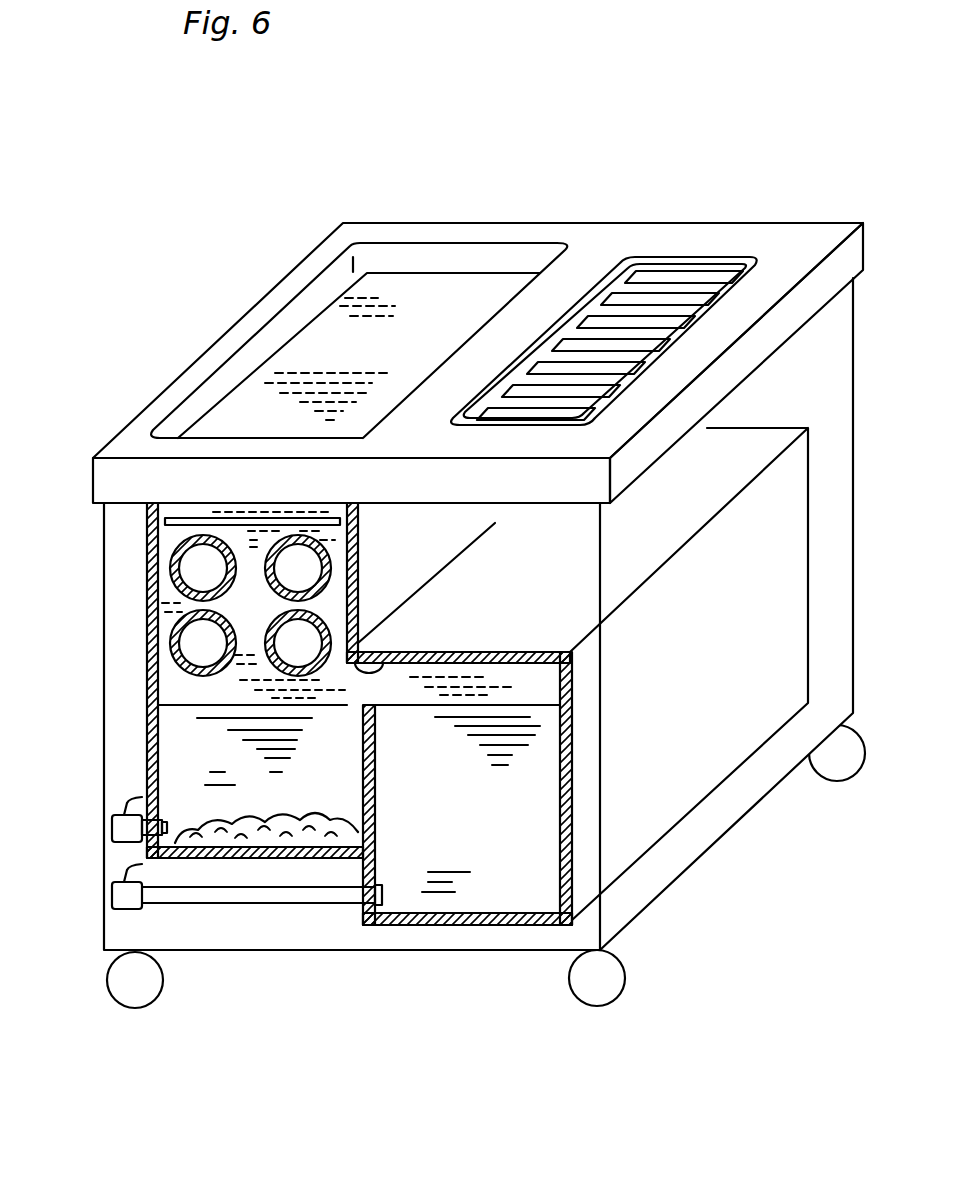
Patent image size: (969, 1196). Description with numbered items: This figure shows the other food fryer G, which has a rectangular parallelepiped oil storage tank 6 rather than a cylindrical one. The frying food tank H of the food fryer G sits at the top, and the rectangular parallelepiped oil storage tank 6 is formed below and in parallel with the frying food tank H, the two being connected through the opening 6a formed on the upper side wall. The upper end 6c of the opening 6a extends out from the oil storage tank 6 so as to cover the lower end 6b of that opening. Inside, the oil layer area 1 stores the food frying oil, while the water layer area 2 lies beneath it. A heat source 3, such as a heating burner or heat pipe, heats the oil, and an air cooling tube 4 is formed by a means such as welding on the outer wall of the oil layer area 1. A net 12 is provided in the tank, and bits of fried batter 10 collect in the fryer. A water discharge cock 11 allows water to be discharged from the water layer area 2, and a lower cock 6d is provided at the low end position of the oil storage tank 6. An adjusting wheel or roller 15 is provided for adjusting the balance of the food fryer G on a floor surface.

The food fryer G is at (756, 166).
The frying food tank H is at (307, 342).
The oil layer area 1 is at (160, 600).
The water layer area 2 is at (175, 757).
The heat source 3 is at (173, 560).
The air cooling tube 4 is at (173, 635).
The rectangular parallelepiped oil storage tank 6 is at (570, 785).
The opening 6a is at (365, 688).
The lower end of the opening 6b is at (362, 705).
The upper end of the opening 6c is at (393, 650).
The lower cock 6d is at (112, 895).
The bits of fried batter 10 is at (247, 838).
The water discharge cock 11 is at (112, 835).
The net 12 is at (177, 536).
The adjusting wheel 15 is at (622, 983).